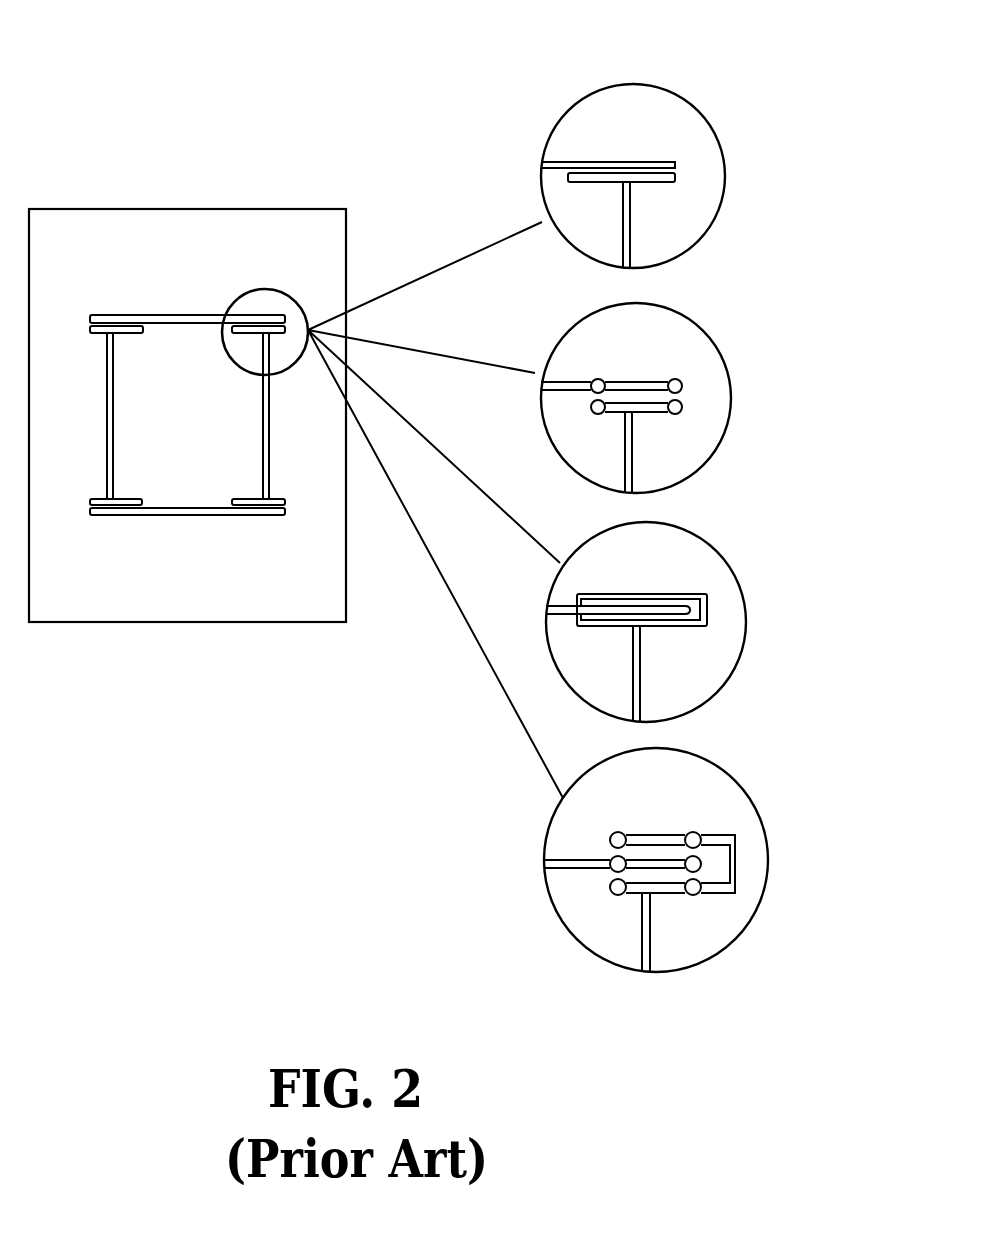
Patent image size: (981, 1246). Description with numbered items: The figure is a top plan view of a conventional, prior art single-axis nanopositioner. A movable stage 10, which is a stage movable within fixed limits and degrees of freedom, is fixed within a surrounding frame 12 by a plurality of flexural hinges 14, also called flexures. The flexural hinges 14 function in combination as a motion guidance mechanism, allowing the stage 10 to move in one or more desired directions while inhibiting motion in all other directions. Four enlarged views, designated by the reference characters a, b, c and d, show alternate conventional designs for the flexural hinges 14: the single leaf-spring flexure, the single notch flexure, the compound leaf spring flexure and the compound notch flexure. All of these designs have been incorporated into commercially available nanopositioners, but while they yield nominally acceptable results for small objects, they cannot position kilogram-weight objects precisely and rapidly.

The movable stage 10 is at (200, 425).
The frame 12 is at (102, 275).
The flexural hinges 14 is at (667, 87).